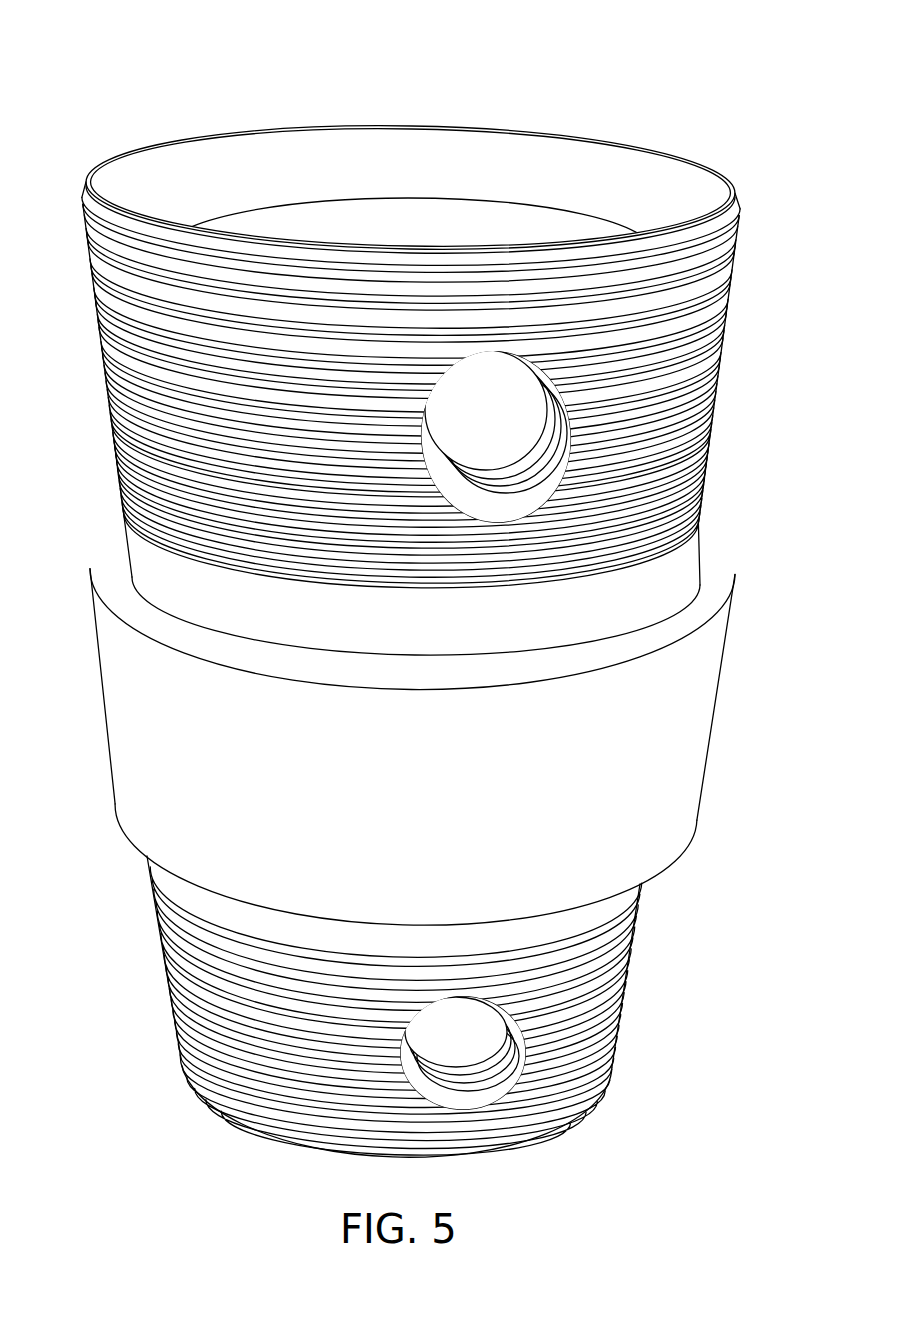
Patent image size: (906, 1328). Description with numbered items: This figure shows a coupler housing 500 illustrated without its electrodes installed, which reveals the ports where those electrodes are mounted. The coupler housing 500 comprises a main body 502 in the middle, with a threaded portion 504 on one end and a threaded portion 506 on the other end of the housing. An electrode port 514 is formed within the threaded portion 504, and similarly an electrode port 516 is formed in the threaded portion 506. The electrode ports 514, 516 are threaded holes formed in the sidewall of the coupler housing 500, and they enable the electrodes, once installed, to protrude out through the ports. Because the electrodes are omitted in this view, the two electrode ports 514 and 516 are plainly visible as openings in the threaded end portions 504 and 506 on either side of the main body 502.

The coupler housing 500 is at (118, 96).
The main body 502 is at (712, 692).
The threaded portion 504 is at (124, 283).
The threaded portion 506 is at (222, 978).
The electrode port 514 is at (462, 432).
The electrode port 516 is at (434, 1044).